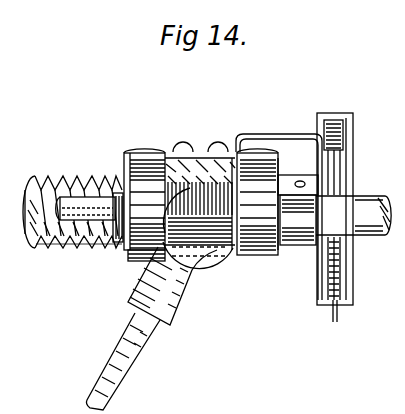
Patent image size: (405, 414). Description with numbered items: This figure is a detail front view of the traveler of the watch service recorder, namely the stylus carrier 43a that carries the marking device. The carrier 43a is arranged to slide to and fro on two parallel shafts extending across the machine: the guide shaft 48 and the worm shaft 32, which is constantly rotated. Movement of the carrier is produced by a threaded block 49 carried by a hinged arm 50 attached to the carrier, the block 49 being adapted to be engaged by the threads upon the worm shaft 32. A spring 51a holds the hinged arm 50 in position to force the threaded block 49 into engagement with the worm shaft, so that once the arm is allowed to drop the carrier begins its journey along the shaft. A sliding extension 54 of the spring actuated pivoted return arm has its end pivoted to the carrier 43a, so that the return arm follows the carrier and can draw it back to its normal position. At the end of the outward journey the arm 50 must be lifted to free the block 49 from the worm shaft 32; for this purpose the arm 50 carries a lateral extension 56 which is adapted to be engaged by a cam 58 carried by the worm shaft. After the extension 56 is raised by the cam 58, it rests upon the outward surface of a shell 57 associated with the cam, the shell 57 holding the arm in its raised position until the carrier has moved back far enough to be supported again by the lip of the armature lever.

The worm shaft 32 is at (84, 184).
The guide shaft 48 is at (72, 241).
The hinged arm 50 is at (154, 152).
The stylus carrier 43a is at (133, 252).
The threaded block 49 is at (196, 158).
The spring 51a is at (214, 242).
The sliding extension 54 is at (142, 344).
The lateral extension 56 is at (280, 134).
The cam 58 is at (335, 167).
The shell 57 is at (348, 304).